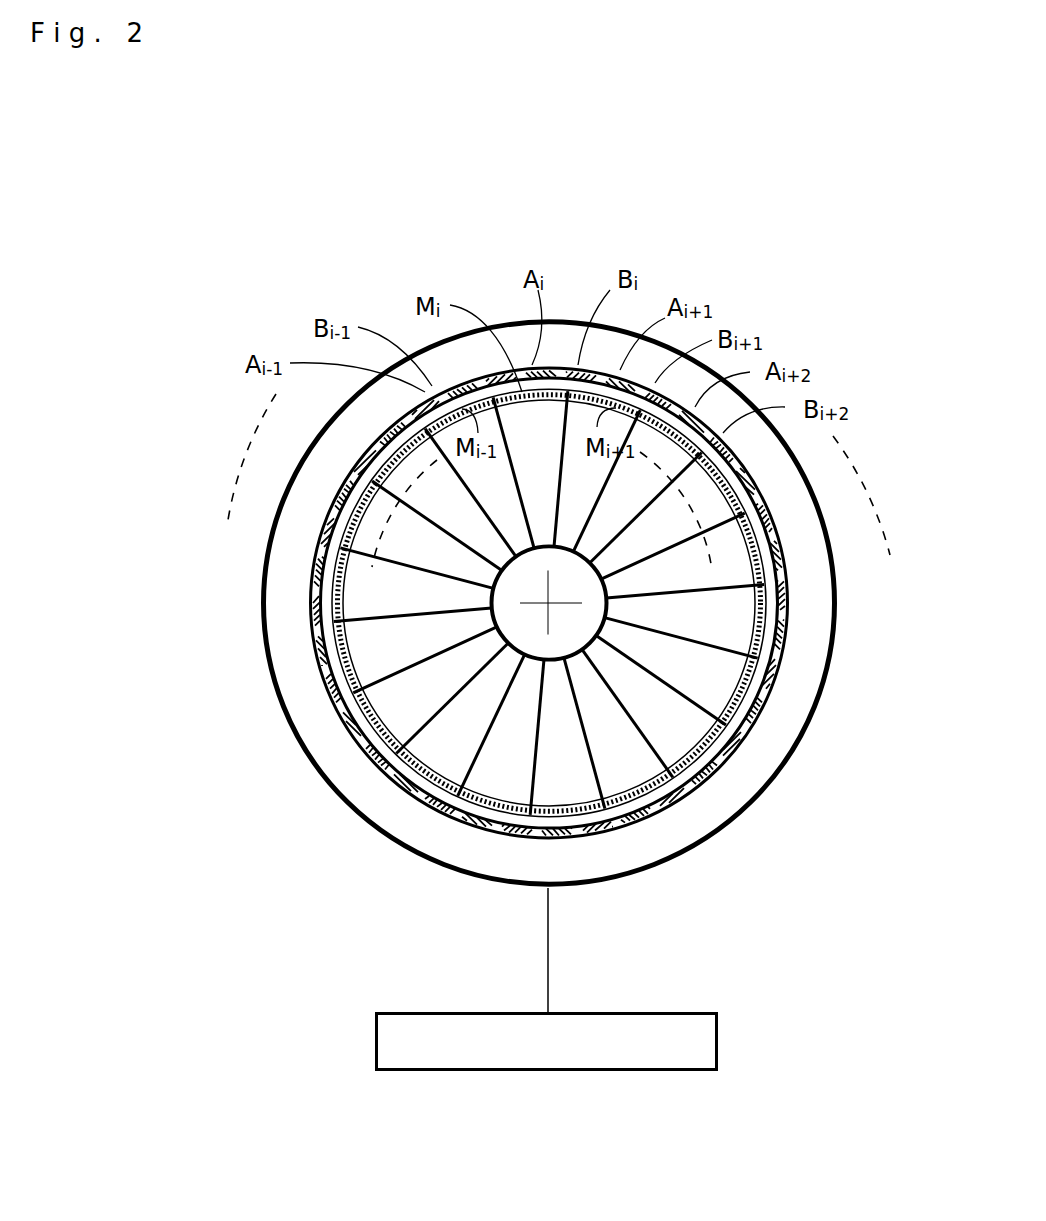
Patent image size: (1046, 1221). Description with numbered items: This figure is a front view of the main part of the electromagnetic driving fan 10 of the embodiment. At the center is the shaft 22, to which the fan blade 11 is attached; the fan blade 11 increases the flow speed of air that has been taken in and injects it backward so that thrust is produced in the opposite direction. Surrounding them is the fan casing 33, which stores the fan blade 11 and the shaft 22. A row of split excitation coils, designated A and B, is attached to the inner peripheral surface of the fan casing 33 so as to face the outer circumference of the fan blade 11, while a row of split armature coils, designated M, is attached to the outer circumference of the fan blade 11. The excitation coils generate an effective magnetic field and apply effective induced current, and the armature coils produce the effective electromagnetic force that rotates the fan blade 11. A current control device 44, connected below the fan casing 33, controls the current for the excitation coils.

The electromagnetic driving fan 10 is at (586, 112).
The fan blade 11 is at (623, 770).
The shaft 22 is at (525, 615).
The fan casing 33 is at (812, 617).
The current control device 44 is at (498, 1018).